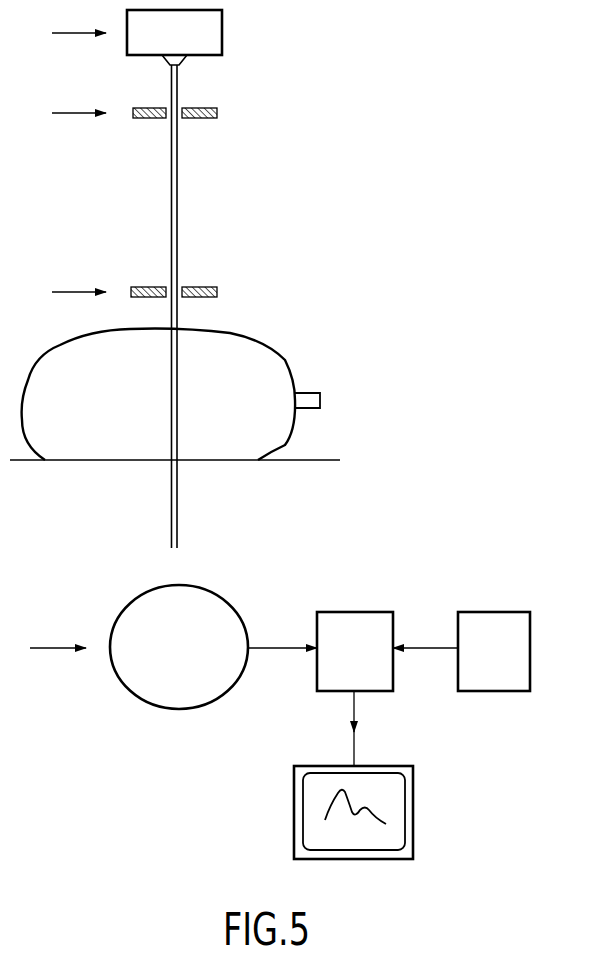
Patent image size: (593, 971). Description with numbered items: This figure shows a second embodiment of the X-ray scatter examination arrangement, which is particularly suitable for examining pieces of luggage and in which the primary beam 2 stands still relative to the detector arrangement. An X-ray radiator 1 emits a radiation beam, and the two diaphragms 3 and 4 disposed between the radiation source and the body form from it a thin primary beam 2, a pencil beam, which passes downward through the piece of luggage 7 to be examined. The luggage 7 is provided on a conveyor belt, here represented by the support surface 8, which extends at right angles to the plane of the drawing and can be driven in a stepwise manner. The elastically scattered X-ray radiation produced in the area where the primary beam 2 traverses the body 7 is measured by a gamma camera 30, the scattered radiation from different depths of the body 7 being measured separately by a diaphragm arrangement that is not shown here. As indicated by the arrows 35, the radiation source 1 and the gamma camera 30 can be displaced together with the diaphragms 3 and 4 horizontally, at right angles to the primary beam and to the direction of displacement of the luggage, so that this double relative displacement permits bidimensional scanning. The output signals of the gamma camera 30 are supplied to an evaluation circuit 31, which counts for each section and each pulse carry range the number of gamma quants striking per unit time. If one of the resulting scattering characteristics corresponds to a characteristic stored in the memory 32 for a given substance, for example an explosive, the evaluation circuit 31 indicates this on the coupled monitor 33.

The X-ray radiator 1 is at (222, 33).
The primary beam 2 is at (178, 188).
The diaphragm 3 is at (217, 113).
The diaphragm 4 is at (217, 291).
The piece of luggage 7 is at (247, 352).
The sample support surface 8 is at (312, 460).
The gamma camera 30 is at (226, 595).
The evaluation circuit 31 is at (348, 612).
The memory 32 is at (493, 612).
The monitor 33 is at (413, 818).
The arrows 35 is at (55, 341).